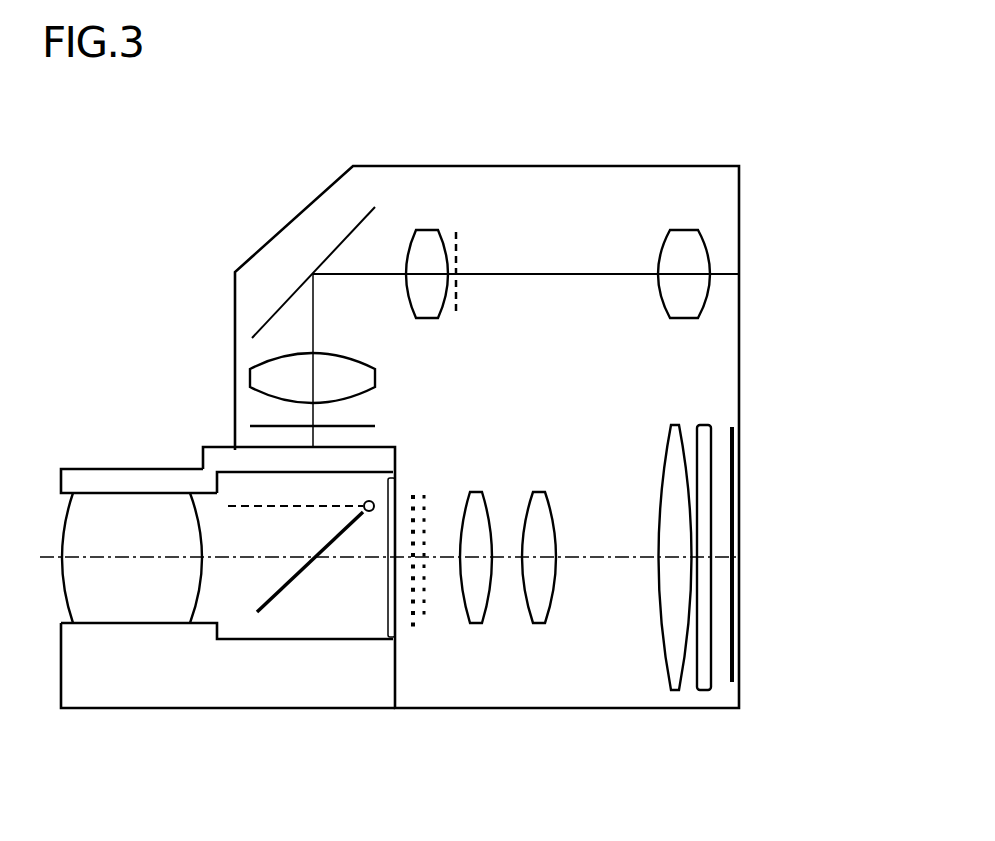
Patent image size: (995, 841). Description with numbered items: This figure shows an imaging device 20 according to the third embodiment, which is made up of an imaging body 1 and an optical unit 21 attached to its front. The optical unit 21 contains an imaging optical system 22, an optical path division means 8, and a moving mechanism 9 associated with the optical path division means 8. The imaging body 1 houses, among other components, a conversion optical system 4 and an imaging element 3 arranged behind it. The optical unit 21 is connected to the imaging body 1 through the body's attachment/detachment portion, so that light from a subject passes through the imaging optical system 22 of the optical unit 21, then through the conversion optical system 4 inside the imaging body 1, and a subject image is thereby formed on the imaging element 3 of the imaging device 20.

The imaging device 20 is at (596, 124).
The imaging body 1 is at (707, 215).
The optical unit 21 is at (82, 482).
The imaging optical system 22 is at (105, 603).
The optical path division means 8 is at (280, 593).
The moving mechanism 9 is at (367, 511).
The conversion optical system 4 is at (556, 665).
The imaging element 3 is at (733, 597).